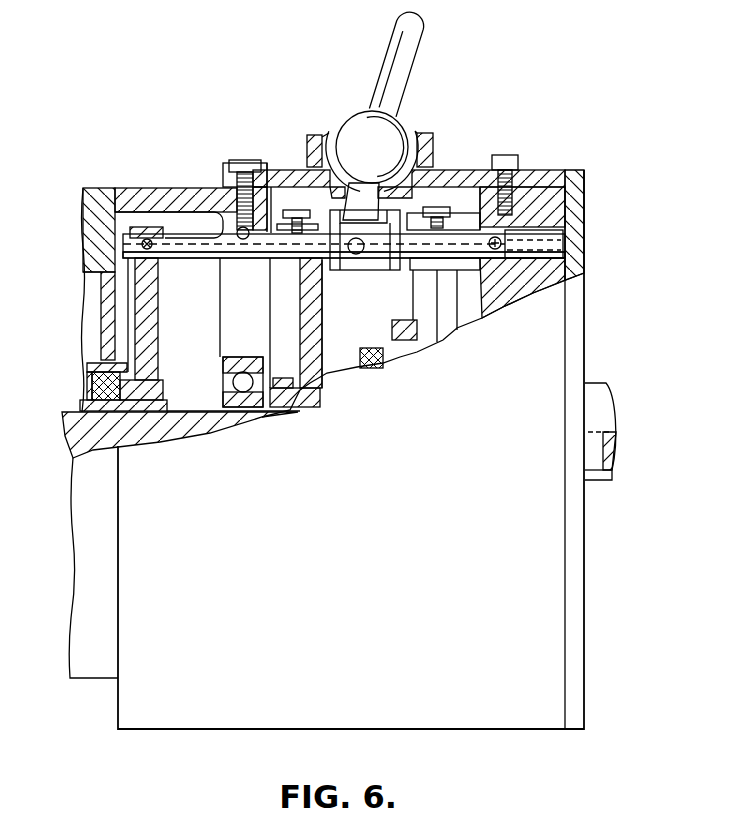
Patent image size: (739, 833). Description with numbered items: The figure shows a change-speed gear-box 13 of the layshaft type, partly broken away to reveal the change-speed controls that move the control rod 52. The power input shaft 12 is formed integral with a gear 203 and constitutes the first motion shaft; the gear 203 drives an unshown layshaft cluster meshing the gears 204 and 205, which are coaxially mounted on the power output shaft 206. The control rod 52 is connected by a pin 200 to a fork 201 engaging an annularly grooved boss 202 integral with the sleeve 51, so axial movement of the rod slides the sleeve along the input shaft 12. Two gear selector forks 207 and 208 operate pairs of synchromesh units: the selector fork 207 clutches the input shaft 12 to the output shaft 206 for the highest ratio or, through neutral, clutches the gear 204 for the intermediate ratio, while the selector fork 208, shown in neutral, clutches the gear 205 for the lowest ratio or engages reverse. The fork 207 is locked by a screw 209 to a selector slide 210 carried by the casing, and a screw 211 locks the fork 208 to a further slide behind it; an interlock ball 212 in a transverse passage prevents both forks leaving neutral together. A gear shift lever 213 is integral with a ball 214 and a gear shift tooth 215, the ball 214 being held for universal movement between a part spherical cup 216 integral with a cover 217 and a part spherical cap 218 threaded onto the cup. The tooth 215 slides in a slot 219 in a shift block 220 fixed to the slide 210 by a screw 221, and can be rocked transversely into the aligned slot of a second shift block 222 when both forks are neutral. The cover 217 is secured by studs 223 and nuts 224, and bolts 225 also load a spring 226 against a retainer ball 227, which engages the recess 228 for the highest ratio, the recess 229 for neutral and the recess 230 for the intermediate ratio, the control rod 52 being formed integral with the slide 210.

The power input shaft 12 is at (82, 416).
The gear-box 13 is at (322, 551).
The sleeve 51 is at (92, 386).
The control rod 52 is at (172, 234).
The pin 200 is at (145, 239).
The fork 201 is at (101, 344).
The annularly grooved boss 202 is at (156, 396).
The gear 203 is at (312, 388).
The gear 204 is at (374, 356).
The gear 205 is at (431, 342).
The power output shaft 206 is at (600, 428).
The selector fork 207 is at (322, 338).
The selector fork 208 is at (445, 313).
The screw 209 is at (306, 209).
The selector slide 210 is at (279, 228).
The screw 211 is at (440, 212).
The interlock ball 212 is at (585, 205).
The gear shift lever 213 is at (400, 56).
The ball 214 is at (377, 140).
The gear shift tooth 215 is at (432, 167).
The part spherical cup 216 is at (315, 152).
The cover 217 is at (467, 171).
The part spherical cap 218 is at (298, 168).
The slot 219 is at (360, 228).
The shift block 220 is at (340, 251).
The screw 221 is at (365, 252).
The second shift block 222 is at (401, 262).
The studs 223 is at (527, 184).
The nuts 224 is at (516, 165).
The bolts 225 is at (235, 164).
The spring 226 is at (239, 228).
The retainer ball 227 is at (323, 292).
The recess 228 is at (240, 262).
The recess 229 is at (222, 262).
The recess 230 is at (208, 262).